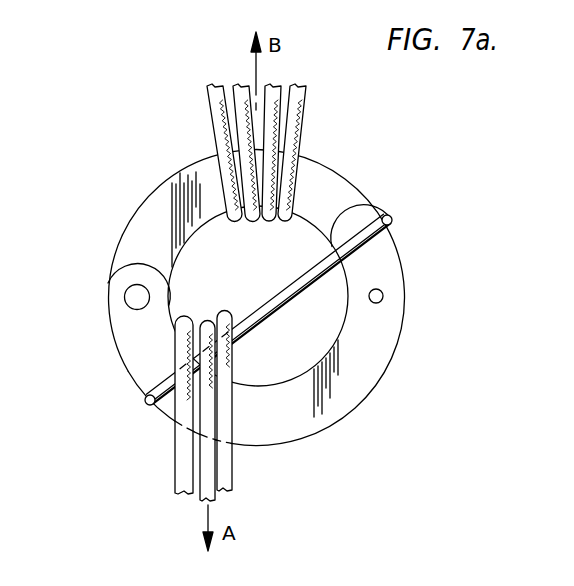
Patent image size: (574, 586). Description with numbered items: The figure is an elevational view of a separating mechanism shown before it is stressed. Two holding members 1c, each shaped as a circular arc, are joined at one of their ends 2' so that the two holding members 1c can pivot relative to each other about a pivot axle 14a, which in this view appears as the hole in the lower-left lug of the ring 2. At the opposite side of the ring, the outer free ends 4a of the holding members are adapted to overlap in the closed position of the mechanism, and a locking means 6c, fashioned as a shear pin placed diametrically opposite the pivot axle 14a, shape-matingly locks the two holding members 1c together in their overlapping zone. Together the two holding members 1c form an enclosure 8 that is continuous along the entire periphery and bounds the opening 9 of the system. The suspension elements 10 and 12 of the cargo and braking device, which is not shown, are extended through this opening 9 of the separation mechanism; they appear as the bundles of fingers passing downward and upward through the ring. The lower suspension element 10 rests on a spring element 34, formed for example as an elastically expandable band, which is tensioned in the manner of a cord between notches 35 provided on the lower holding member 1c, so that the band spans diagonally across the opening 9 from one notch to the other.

The annular ring body 2 is at (247, 298).
The joined ends 2' is at (97, 303).
The holding members 1c is at (172, 173).
The outer free ends 4a is at (374, 212).
The locking means 6c is at (384, 297).
The enclosure 8 is at (342, 331).
The opening 9 is at (284, 371).
The suspension element 10 is at (176, 471).
The suspension element 12 is at (213, 108).
The pivot axle 14a is at (124, 297).
The spring element 34 is at (318, 273).
The notches 35 is at (396, 222).